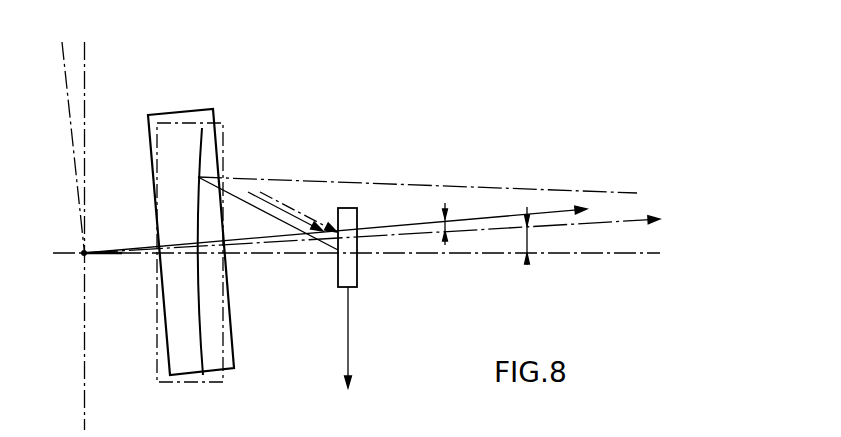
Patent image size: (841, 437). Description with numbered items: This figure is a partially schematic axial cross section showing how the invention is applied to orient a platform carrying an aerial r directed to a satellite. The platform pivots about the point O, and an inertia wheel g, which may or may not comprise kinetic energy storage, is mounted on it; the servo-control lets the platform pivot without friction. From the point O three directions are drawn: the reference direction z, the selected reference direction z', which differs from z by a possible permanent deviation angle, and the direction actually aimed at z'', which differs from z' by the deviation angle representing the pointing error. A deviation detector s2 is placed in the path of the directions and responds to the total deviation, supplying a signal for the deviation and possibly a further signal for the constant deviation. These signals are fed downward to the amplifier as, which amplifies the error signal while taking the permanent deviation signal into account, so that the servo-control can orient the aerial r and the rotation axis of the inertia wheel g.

The inertia wheel g is at (181, 131).
The aerial r is at (197, 292).
The point O is at (82, 256).
The deviation detector s2 is at (350, 210).
The reference direction OZ z is at (364, 253).
The selected reference direction OZ' z' is at (381, 230).
The direction actually aimed at OZ'' z'' is at (345, 225).
The amplifier as is at (380, 350).